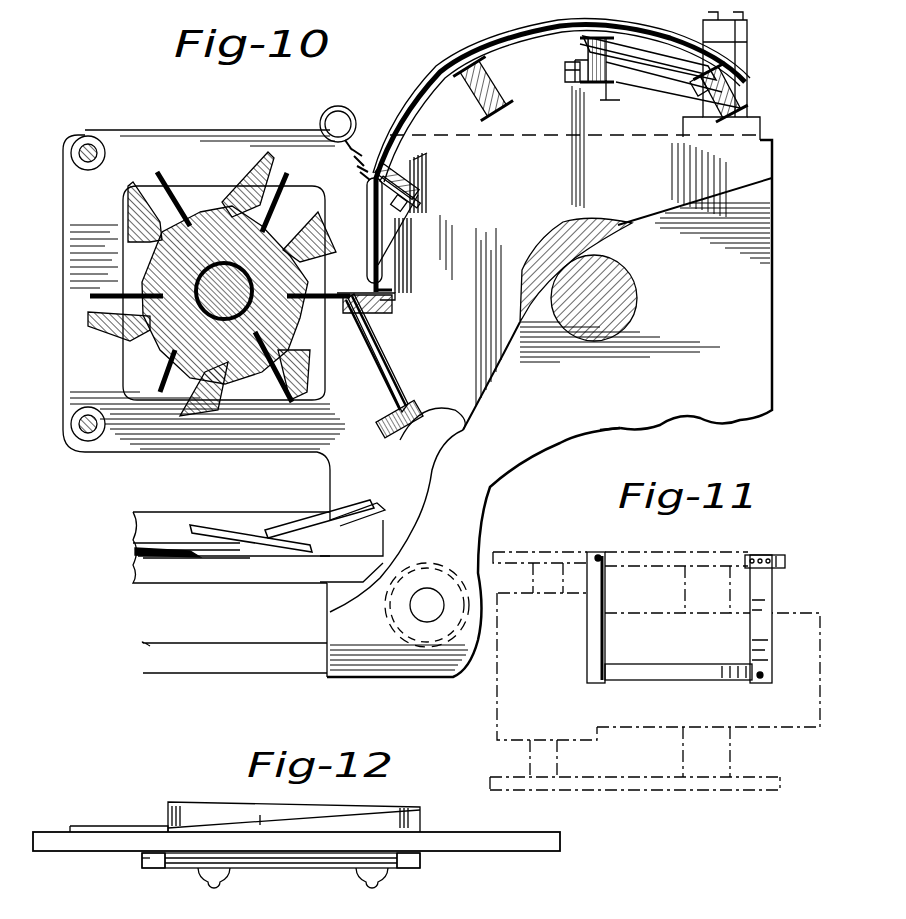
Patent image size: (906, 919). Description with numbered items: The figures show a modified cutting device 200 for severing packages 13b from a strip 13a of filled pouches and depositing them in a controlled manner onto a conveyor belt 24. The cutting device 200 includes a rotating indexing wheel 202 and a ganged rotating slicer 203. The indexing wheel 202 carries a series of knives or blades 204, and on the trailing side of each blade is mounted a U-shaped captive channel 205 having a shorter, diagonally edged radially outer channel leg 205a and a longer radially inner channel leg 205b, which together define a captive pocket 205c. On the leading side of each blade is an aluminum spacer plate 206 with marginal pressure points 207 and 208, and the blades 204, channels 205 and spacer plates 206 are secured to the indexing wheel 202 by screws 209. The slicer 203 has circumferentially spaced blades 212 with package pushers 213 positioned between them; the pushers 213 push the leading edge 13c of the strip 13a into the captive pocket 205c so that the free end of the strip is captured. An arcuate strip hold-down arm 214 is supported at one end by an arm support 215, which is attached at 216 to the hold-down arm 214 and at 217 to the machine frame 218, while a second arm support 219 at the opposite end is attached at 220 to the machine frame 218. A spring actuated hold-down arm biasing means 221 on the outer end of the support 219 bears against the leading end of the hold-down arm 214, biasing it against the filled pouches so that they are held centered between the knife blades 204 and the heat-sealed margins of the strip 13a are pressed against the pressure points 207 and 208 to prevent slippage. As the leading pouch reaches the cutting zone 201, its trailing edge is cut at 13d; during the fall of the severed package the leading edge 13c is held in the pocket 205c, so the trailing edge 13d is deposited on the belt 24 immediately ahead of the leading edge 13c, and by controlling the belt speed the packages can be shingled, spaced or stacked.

In FIG. 10, the strip 13a is at (655, 44).
In FIG. 10, the packages 13b is at (182, 562).
In FIG. 10, the first cut edge 13c is at (412, 404).
In FIG. 10, the second cut edge 13d is at (350, 265).
In FIG. 10, the conveyor belt 24 is at (140, 572).
In FIG. 10, the cutting device 200 is at (388, 104).
In FIG. 10, the cutting zone 201 is at (345, 320).
In FIG. 10, the rotating indexing wheel 202 is at (742, 160).
In FIG. 11, the rotating indexing wheel 202 is at (748, 733).
In FIG. 10, the ganged rotating slicer 203 is at (150, 350).
In FIG. 11, the ganged rotating slicer 203 is at (493, 682).
In FIG. 10, the knives or blades 204 is at (596, 84).
In FIG. 12, the knives or blades 204 is at (543, 862).
In FIG. 12, the U-shaped captive channel 205 is at (424, 821).
In FIG. 10, the radially outer channel leg 205a is at (380, 420).
In FIG. 10, the radially inner channel leg 205b is at (435, 181).
In FIG. 10, the captive pocket 205c is at (394, 287).
In FIG. 10, the aluminum spacer plate 206 is at (590, 44).
In FIG. 12, the aluminum spacer plate 206 is at (292, 870).
In FIG. 12, the marginal pressure point 207 is at (158, 868).
In FIG. 12, the marginal pressure point 208 is at (424, 868).
In FIG. 10, the screws 209 is at (570, 84).
In FIG. 12, the screws 209 is at (368, 882).
In FIG. 10, the circumferentially spaced blades 212 is at (305, 172).
In FIG. 10, the package pushers 213 is at (128, 210).
In FIG. 10, the arcuate strip hold-down arm 214 is at (478, 62).
In FIG. 11, the arcuate strip hold-down arm 214 is at (679, 674).
In FIG. 10, the arm support 215 is at (748, 58).
In FIG. 11, the arm support 215 is at (764, 596).
In FIG. 10, the attachment of arm support to hold-down arm 216 is at (740, 42).
In FIG. 11, the attachment of arm support to hold-down arm 216 is at (768, 682).
In FIG. 11, the attachment of arm support to machine frame 217 is at (762, 553).
In FIG. 10, the machine frame 218 is at (752, 118).
In FIG. 11, the machine frame 218 is at (702, 548).
In FIG. 11, the second arm support 219 is at (588, 646).
In FIG. 11, the attachment of second arm support to machine frame 220 is at (598, 553).
In FIG. 10, the spring actuated hold-down arm biasing means 221 is at (328, 110).